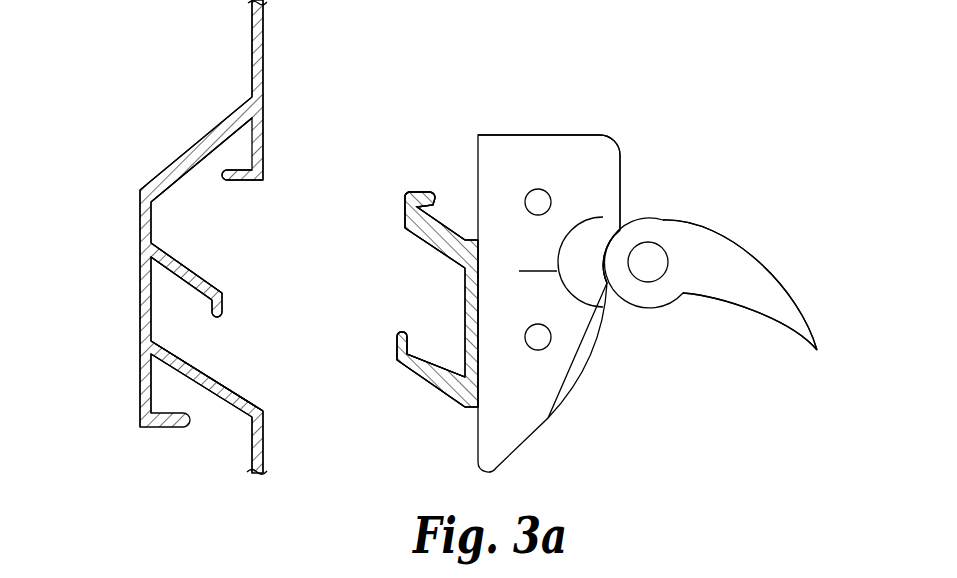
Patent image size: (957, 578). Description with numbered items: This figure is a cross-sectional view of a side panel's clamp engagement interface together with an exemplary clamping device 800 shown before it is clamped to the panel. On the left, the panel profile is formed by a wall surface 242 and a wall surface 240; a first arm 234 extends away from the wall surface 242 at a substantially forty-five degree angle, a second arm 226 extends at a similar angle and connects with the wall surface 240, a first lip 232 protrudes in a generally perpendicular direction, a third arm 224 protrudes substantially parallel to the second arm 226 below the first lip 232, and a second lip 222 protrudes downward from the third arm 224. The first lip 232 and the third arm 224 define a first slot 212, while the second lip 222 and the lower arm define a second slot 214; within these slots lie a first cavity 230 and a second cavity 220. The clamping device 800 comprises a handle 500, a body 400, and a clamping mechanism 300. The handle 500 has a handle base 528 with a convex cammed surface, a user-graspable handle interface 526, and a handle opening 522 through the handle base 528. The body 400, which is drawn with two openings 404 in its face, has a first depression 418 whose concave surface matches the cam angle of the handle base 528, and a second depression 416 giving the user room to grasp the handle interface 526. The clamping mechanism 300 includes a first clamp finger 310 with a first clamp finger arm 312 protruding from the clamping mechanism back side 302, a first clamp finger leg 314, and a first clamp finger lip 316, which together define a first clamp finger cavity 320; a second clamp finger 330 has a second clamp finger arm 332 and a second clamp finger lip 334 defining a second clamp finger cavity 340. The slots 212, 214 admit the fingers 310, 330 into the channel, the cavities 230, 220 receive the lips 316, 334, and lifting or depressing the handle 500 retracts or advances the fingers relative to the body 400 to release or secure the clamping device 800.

The first slot 212 is at (209, 252).
The second slot 214 is at (219, 360).
The second cavity 220 is at (165, 286).
The second lip 222 is at (224, 310).
The third arm 224 is at (185, 262).
The second arm 226 is at (223, 386).
The first cavity 230 is at (221, 155).
The first lip 232 is at (236, 182).
The first arm 234 is at (195, 145).
The wall surface 240 is at (265, 42).
The wall surface 242 is at (140, 300).
The clamping mechanism 300 is at (474, 388).
The clamping mechanism back side 302 is at (464, 290).
The first clamp finger 310 is at (391, 220).
The first clamp finger arm 312 is at (423, 240).
The first clamp finger leg 314 is at (406, 210).
The first clamp finger lip 316 is at (417, 191).
The first clamp finger cavity 320 is at (434, 217).
The second clamp finger 330 is at (384, 371).
The second clamp finger arm 332 is at (425, 381).
The second clamp finger lip 334 is at (397, 345).
The second clamp finger cavity 340 is at (416, 353).
The body 400 is at (549, 303).
The mounting holes 404 is at (539, 203).
The second depression 416 is at (567, 370).
The first depression 418 is at (605, 258).
The handle 500 is at (761, 217).
The handle opening 522 is at (662, 244).
The handle interface 526 is at (790, 313).
The handle base 528 is at (604, 289).
The clamping device 800 is at (589, 77).